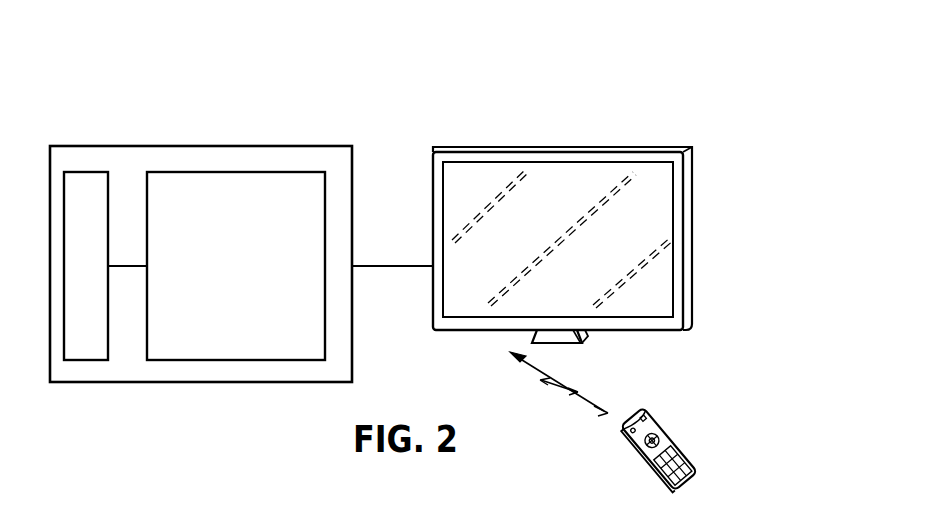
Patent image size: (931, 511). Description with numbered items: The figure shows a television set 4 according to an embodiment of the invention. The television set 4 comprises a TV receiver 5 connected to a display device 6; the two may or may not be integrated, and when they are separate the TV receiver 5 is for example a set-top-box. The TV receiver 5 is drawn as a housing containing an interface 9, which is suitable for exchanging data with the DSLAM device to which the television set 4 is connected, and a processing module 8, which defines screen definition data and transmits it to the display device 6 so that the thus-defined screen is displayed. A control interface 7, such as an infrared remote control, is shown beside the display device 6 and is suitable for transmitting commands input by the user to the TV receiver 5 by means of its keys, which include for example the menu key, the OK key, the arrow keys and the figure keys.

The television set 4 is at (117, 117).
The TV receiver 5 is at (232, 146).
The display device 6 is at (570, 147).
The control interface 7 is at (660, 424).
The processing module 8 is at (146, 323).
The interface 9 is at (108, 197).